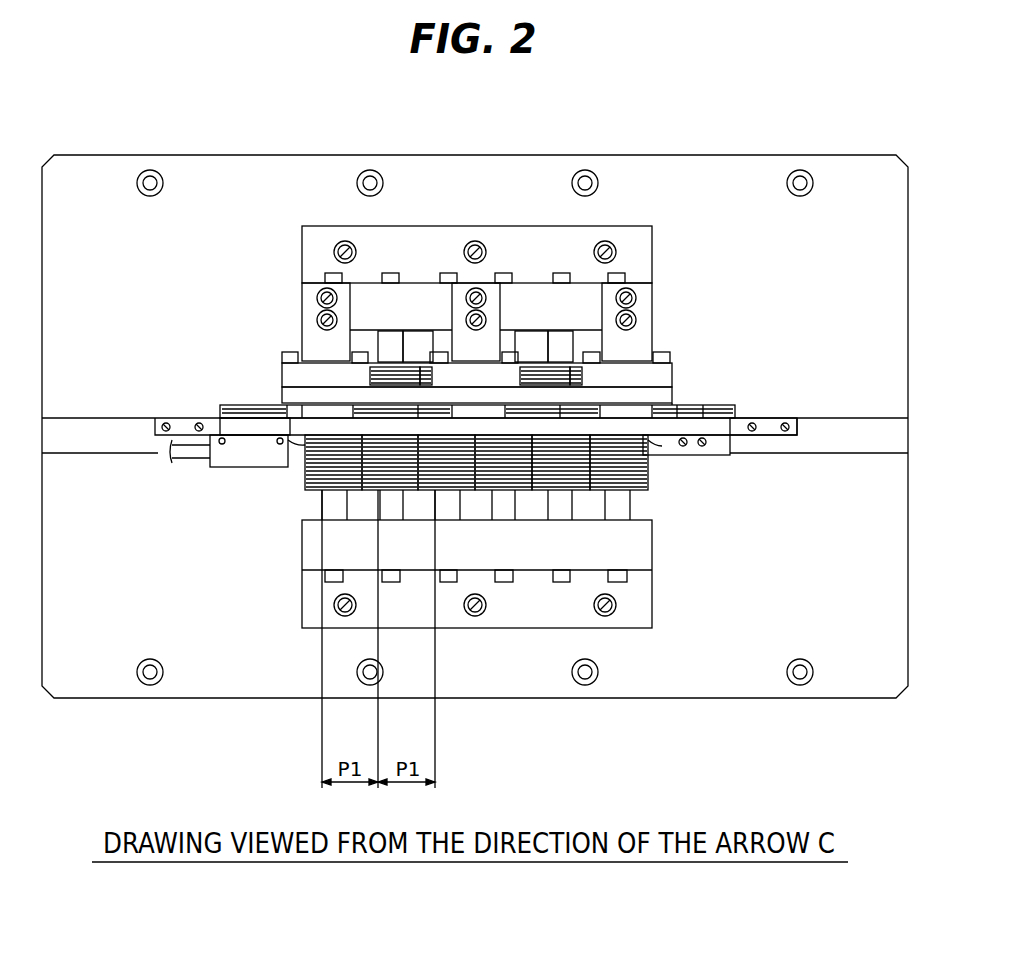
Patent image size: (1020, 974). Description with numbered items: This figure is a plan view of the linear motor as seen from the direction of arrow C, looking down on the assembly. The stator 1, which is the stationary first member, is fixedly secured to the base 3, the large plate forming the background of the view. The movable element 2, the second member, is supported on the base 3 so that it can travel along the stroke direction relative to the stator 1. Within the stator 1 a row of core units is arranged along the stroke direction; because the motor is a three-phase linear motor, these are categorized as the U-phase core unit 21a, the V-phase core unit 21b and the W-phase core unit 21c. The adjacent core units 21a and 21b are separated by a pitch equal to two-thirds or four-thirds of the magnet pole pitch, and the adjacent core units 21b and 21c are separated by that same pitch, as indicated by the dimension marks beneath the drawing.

The stator 1 is at (657, 248).
The movable element 2 is at (712, 388).
The base 3 is at (843, 172).
The U-phase core unit 21a is at (335, 470).
The V-phase core unit 21b is at (403, 452).
The W-phase core unit 21c is at (460, 463).